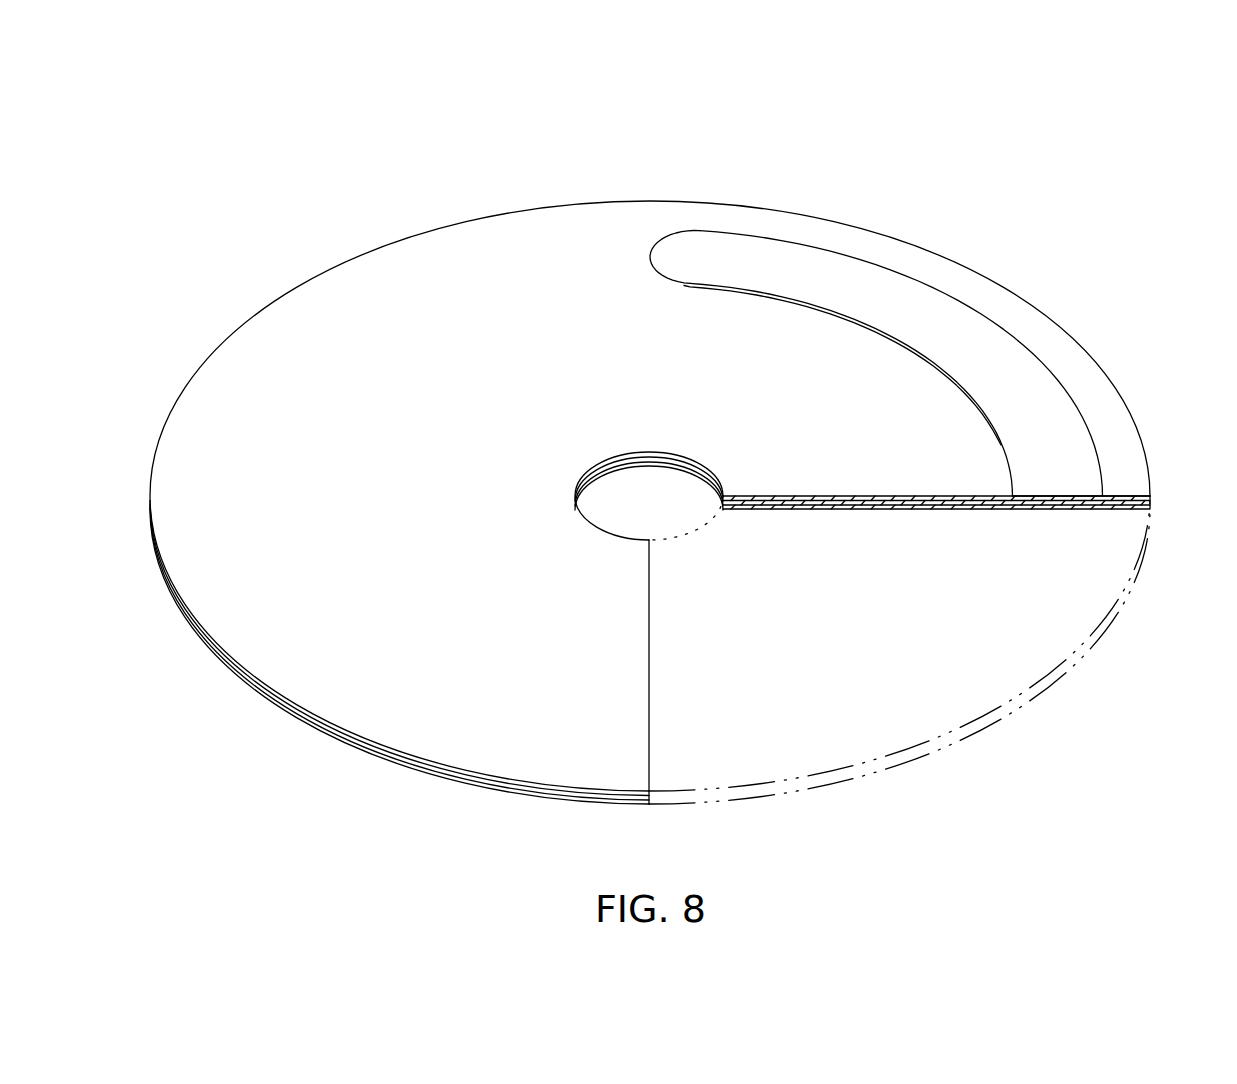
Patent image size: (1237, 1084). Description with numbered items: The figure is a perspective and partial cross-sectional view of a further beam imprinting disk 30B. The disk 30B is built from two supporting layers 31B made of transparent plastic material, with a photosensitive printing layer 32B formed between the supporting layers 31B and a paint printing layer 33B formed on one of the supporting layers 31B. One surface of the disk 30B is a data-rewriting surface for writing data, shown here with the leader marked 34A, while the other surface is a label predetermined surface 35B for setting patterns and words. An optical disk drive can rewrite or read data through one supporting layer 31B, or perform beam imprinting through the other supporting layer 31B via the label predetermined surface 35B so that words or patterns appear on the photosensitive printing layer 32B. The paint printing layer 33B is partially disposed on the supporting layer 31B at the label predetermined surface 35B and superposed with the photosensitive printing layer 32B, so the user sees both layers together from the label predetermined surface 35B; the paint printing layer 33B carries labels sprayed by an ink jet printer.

The disk 30B is at (908, 240).
The supporting layer 31B is at (860, 497).
The photosensitive printing layer 32B is at (1118, 500).
The paint printing layer 33B is at (1063, 495).
The lower layer 34A is at (783, 510).
The label predetermined surface 35B is at (690, 238).